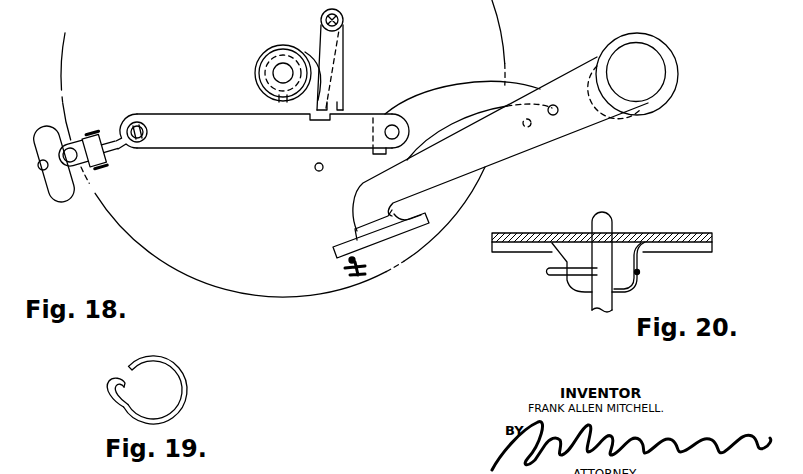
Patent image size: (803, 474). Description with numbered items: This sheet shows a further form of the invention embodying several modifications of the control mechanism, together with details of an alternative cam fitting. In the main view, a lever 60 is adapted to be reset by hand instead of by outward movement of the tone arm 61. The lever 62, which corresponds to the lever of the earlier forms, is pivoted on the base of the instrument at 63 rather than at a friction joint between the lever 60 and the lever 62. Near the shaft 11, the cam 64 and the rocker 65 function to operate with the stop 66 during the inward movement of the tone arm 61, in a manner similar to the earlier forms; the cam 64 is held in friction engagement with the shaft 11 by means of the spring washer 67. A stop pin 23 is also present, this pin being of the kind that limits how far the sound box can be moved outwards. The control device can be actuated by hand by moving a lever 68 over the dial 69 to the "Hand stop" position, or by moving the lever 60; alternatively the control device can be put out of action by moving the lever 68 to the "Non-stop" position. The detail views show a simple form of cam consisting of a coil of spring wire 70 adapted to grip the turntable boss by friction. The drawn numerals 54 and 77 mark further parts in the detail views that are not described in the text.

In FIG. 18, the shaft 11 is at (287, 70).
In FIG. 20, the shaft 11 is at (600, 313).
In FIG. 18, the stop pin 23 is at (317, 171).
In FIG. 18, the stop foot 54 is at (338, 108).
In FIG. 18, the lever 60 is at (449, 88).
In FIG. 18, the tone arm 61 is at (517, 147).
In FIG. 18, the lever 62 is at (193, 138).
In FIG. 18, the pivot 63 is at (136, 131).
In FIG. 18, the cam 64 is at (277, 45).
In FIG. 18, the rocker 65 is at (343, 43).
In FIG. 18, the stop 66 is at (332, 116).
In FIG. 18, the spring washer 67 is at (261, 72).
In FIG. 18, the lever 68 is at (73, 142).
In FIG. 18, the dial 69 is at (58, 200).
In FIG. 19, the coil of spring wire 70 is at (172, 360).
In FIG. 20, the coil of spring wire 70 is at (547, 273).
In FIG. 20, the spring clip 77 is at (640, 252).